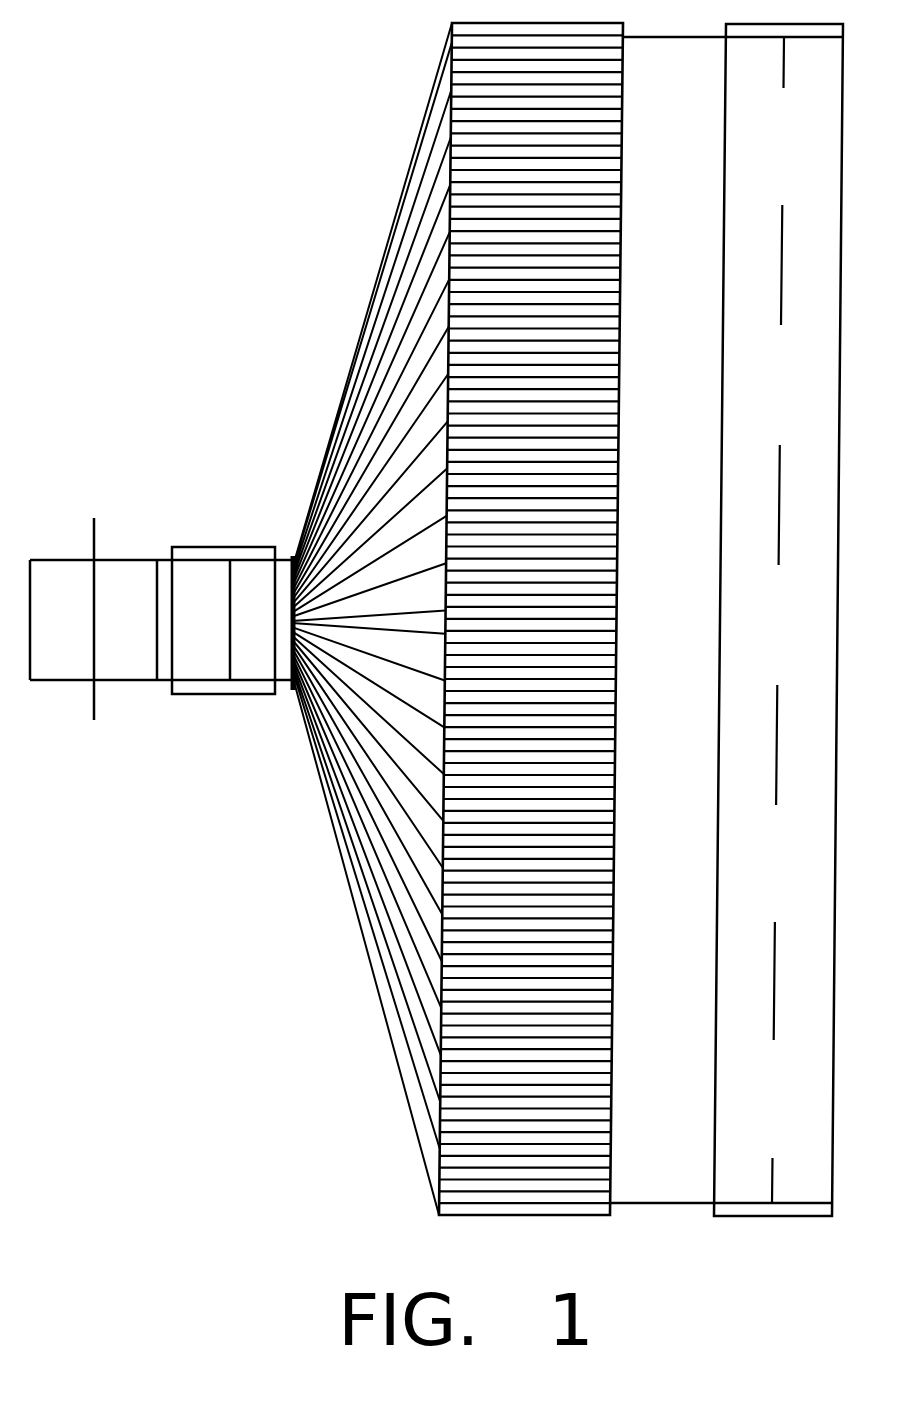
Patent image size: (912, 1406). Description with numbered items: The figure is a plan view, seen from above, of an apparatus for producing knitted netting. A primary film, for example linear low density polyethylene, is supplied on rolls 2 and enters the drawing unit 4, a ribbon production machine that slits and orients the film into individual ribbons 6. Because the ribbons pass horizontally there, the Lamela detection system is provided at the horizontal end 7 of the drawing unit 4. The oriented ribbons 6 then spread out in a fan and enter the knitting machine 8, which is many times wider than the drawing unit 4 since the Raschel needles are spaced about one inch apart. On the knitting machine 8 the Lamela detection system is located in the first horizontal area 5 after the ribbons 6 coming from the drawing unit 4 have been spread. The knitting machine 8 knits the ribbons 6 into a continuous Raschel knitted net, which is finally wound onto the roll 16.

The rolls 2 is at (30, 680).
The drawing unit 4 is at (172, 694).
The horizontal end 7 is at (280, 708).
The individual ribbons 6 is at (367, 322).
The first horizontal area 5 is at (491, 1226).
The knitting machine 8 is at (610, 1215).
The roll 16 is at (830, 1216).